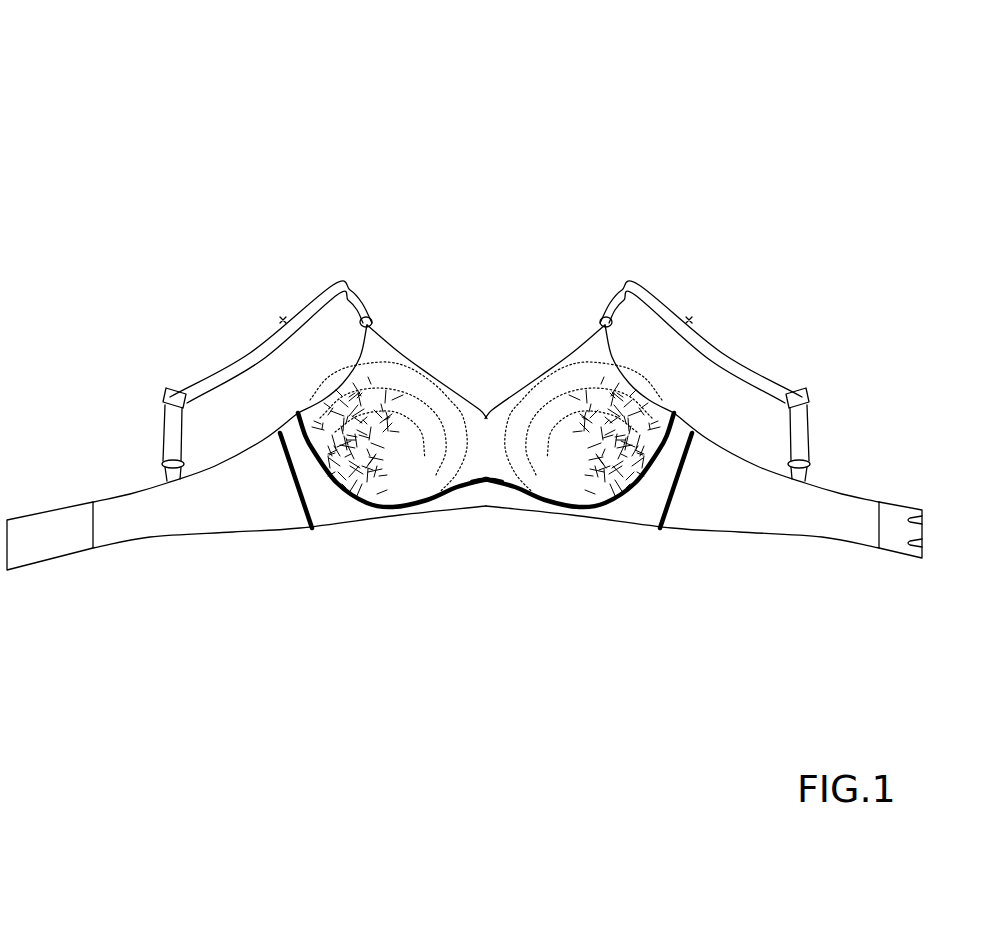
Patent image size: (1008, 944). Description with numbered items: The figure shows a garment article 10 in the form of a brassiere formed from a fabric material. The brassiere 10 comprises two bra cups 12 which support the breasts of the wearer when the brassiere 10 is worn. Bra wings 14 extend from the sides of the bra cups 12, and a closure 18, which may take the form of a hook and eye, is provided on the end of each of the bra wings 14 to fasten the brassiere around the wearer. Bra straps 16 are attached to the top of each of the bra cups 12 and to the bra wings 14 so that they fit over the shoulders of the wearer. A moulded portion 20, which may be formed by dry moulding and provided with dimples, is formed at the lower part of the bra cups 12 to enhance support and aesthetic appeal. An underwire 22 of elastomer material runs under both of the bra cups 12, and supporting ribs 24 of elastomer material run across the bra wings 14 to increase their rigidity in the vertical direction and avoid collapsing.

The garment article 10 is at (125, 143).
The bra cups 12 is at (567, 407).
The bra wings 14 is at (235, 512).
The bra straps 16 is at (235, 353).
The closure 18 is at (40, 552).
The moulded portion 20 is at (358, 472).
The underwire 22 is at (520, 490).
The supporting ribs 24 is at (302, 510).